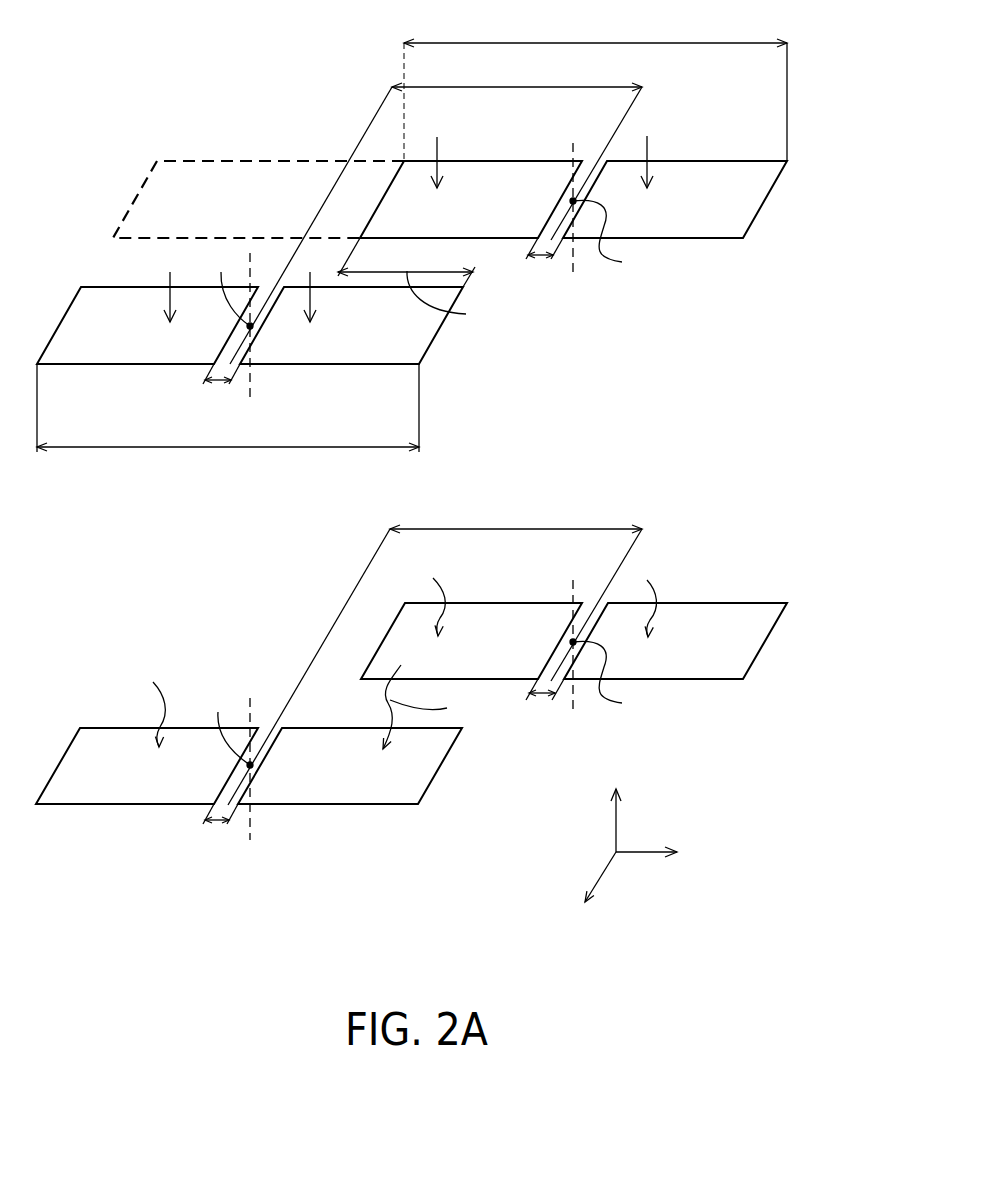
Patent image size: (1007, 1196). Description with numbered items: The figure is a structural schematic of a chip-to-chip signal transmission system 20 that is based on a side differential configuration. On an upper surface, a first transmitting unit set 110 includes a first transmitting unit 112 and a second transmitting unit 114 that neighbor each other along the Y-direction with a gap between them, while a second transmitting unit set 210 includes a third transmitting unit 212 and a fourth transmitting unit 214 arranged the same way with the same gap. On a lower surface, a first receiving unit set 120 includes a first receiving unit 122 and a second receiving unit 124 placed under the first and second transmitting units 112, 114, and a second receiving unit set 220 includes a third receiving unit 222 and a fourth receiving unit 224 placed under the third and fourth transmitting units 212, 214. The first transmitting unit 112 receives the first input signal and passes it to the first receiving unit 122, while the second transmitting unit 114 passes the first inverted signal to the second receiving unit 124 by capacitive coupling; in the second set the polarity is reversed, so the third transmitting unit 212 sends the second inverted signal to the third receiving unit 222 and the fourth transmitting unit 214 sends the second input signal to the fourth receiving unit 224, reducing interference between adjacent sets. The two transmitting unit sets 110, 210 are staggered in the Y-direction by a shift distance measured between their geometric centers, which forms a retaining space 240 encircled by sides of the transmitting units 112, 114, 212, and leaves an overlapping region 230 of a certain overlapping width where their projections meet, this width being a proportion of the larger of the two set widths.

The chip-to-chip signal transmission system 20 is at (731, 972).
The first transmitting unit set 110 is at (250, 350).
The first transmitting unit 112 is at (135, 352).
The second transmitting unit 114 is at (350, 352).
The first receiving unit set 120 is at (249, 791).
The first receiving unit 122 is at (135, 793).
The second receiving unit 124 is at (350, 793).
The second transmitting unit set 210 is at (573, 171).
The third transmitting unit 212 is at (513, 172).
The fourth transmitting unit 214 is at (725, 172).
The second receiving unit set 220 is at (574, 612).
The third receiving unit 222 is at (506, 617).
The fourth receiving unit 224 is at (725, 617).
The overlapping region 230 is at (457, 301).
The retaining space 240 is at (208, 162).